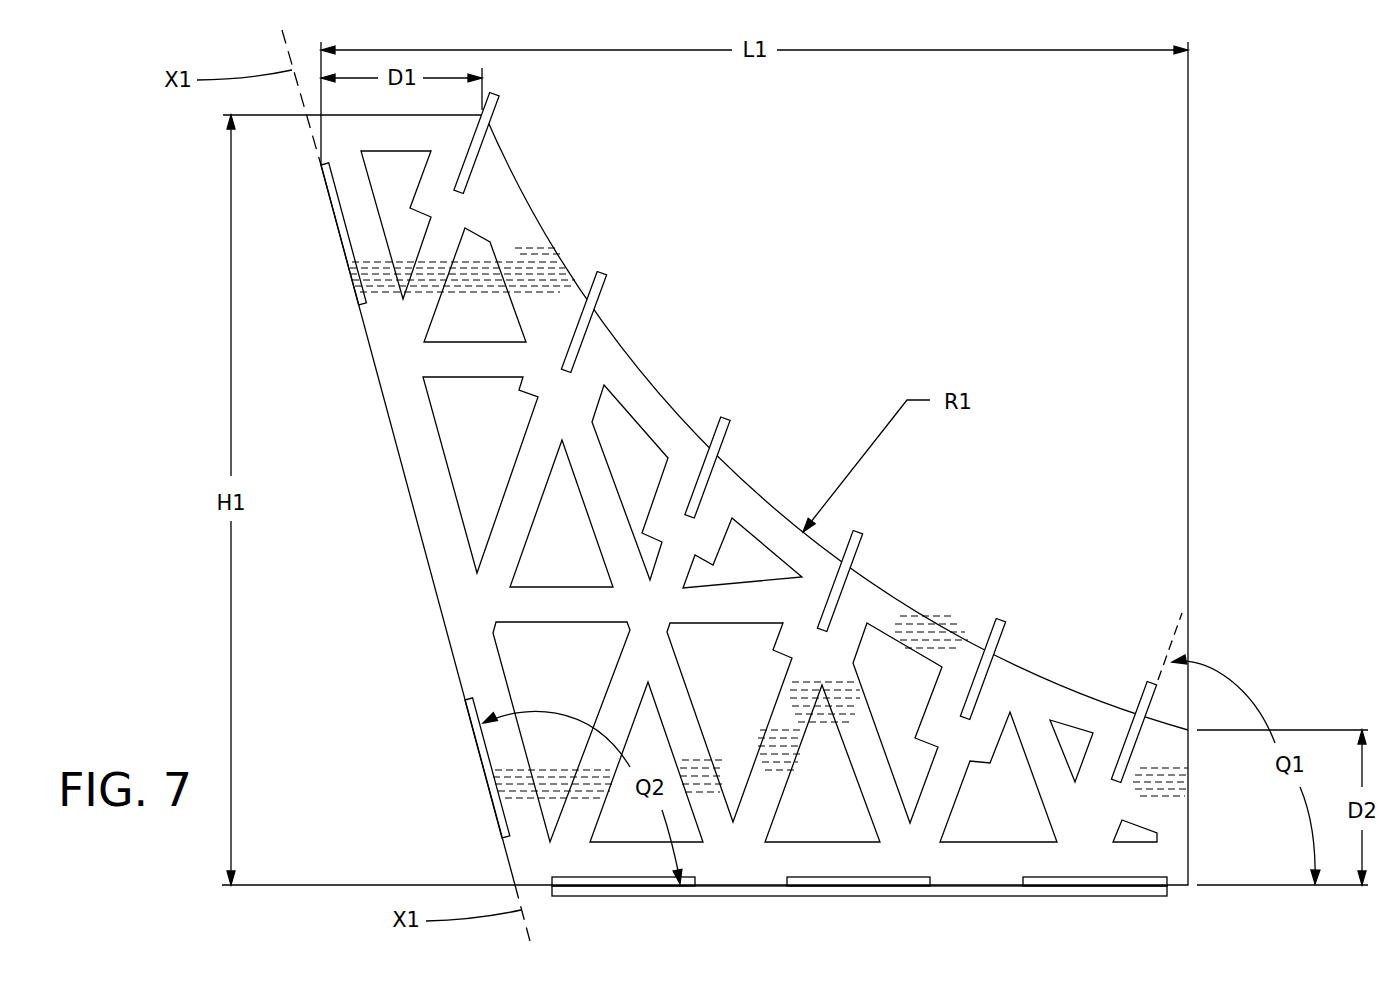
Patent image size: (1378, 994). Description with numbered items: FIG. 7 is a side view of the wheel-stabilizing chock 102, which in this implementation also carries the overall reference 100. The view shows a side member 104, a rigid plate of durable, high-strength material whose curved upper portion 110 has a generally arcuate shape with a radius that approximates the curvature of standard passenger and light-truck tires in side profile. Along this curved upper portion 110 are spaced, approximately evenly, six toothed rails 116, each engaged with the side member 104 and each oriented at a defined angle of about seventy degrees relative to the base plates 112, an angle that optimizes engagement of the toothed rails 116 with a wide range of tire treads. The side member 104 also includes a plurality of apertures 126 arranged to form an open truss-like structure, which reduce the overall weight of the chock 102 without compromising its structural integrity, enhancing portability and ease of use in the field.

The bracket assembly 100 is at (798, 152).
The wheel-stabilizing chock 102 is at (863, 183).
The side member 104 is at (475, 604).
The curved upper portion 110 is at (542, 230).
The base plates 112 is at (623, 878).
The toothed rails 116 is at (492, 117).
The apertures 126 is at (393, 210).